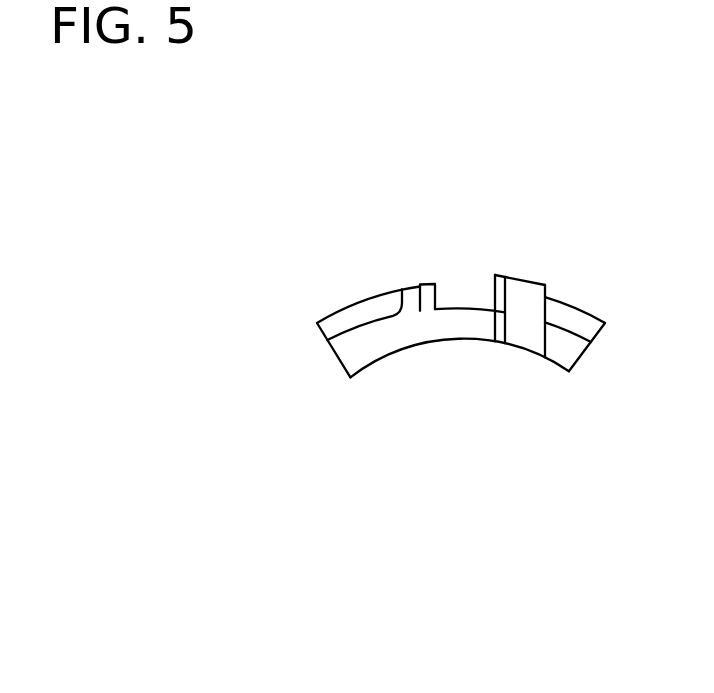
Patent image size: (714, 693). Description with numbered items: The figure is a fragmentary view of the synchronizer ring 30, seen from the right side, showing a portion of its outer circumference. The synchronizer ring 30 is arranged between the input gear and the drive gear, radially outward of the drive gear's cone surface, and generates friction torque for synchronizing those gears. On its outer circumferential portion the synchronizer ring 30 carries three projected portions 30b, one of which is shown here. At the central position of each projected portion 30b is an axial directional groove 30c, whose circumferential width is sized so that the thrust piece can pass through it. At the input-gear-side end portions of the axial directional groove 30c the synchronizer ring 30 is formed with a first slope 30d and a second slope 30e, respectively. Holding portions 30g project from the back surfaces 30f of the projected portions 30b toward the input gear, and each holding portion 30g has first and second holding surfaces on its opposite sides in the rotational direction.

The synchronizer ring 30 is at (367, 350).
The projected portions 30b is at (520, 292).
The axial directional groove 30c is at (464, 293).
The first slope 30d is at (498, 293).
The second slope 30e is at (430, 302).
The back surfaces 30f is at (383, 333).
The holding portions 30g is at (535, 293).